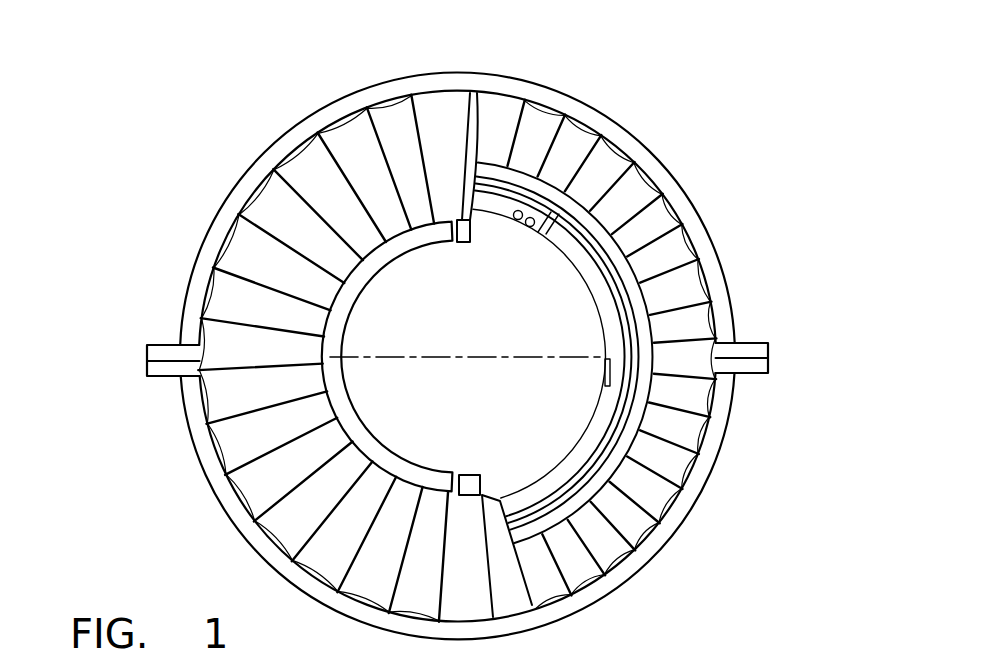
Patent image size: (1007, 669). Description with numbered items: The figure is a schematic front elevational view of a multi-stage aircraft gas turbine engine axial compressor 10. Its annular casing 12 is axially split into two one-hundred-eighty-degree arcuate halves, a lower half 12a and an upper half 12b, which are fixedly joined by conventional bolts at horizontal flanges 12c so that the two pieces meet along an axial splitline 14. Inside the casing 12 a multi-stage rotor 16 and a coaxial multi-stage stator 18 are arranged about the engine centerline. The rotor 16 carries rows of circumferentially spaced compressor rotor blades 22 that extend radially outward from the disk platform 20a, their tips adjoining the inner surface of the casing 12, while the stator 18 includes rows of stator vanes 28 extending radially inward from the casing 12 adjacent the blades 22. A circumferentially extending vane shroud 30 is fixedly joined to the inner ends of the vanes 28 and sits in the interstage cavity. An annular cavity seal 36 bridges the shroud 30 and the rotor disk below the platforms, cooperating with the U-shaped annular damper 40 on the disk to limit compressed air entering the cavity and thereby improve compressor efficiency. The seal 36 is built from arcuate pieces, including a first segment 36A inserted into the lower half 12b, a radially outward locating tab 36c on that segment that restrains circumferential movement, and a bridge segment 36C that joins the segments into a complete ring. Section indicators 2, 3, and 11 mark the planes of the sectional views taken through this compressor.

The axial compressor 10 is at (200, 212).
The annular casing 12 is at (461, 355).
The casing lower half 12a is at (734, 282).
The casing upper half 12b is at (736, 440).
The horizontal flanges 12c is at (154, 368).
The splitline 14 is at (442, 360).
The multi-stage rotor 16 is at (620, 195).
The multi-stage stator 18 is at (304, 172).
The disk platform 20a is at (665, 500).
The compressor rotor blades 22 is at (697, 337).
The stator vanes 28 is at (260, 314).
The vane shroud 30 is at (345, 372).
The cavity seal 36 is at (597, 327).
The first segment 36A is at (578, 452).
The locating tab 36c is at (630, 363).
The bridge segment 36C is at (505, 162).
The annular damper 40 is at (575, 490).
The section line 2- 2 is at (62, 348).
The section line 3- 3 is at (712, 145).
The section line 11- 11 is at (593, 103).